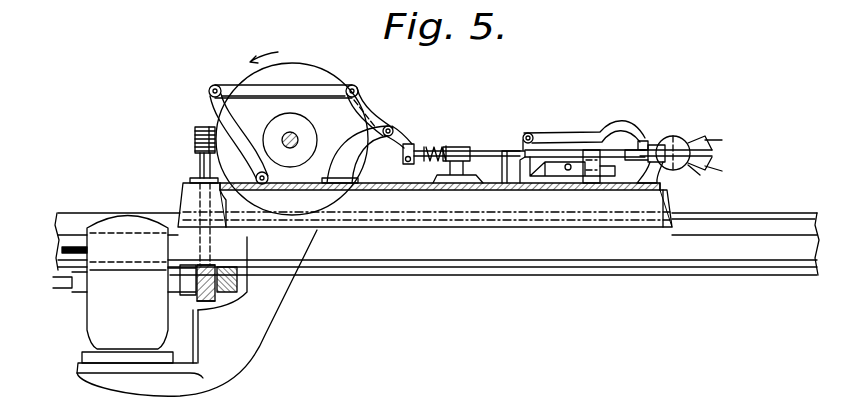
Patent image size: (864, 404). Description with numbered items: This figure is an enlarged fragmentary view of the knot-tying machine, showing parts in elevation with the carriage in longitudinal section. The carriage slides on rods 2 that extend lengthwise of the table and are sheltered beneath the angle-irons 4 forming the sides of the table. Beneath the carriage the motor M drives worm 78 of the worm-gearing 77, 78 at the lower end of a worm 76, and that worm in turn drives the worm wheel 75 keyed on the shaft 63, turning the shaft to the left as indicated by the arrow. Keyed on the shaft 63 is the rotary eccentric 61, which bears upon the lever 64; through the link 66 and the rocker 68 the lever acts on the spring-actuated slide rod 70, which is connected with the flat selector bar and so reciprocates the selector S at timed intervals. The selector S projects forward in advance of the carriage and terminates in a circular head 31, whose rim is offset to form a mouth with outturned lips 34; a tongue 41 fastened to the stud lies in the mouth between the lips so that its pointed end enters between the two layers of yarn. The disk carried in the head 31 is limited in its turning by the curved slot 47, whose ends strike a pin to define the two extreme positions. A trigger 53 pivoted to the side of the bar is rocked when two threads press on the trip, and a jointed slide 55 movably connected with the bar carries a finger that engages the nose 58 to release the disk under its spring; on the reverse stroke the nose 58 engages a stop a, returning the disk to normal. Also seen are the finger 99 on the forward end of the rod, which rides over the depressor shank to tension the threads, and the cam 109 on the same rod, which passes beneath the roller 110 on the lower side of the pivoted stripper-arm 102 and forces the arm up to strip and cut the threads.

The rods 2 is at (552, 254).
The angle-irons 4 is at (761, 213).
The motor M is at (124, 290).
The worm-gearing 77 is at (200, 297).
The worm 78 is at (236, 288).
The worm 76 is at (196, 150).
The link 66 is at (278, 91).
The rotary eccentric 61 is at (291, 124).
The shaft 63 is at (299, 140).
The worm wheel 75 is at (337, 83).
The lever 64 is at (253, 143).
The rocker 68 is at (403, 135).
The spring-actuated slide rod 70 is at (484, 150).
The cam 109 is at (537, 157).
The stop a is at (590, 151).
The roller 110 is at (573, 170).
The finger 99 is at (609, 172).
The stripper-arm 102 is at (612, 119).
The jointed slide 55 is at (650, 146).
The trigger 53 is at (643, 150).
The nose 58 is at (656, 166).
The circular head 31 is at (683, 170).
The selector S is at (682, 154).
The curved slot 47 is at (691, 143).
The outturned lips 34 is at (706, 146).
The tongue 41 is at (698, 172).